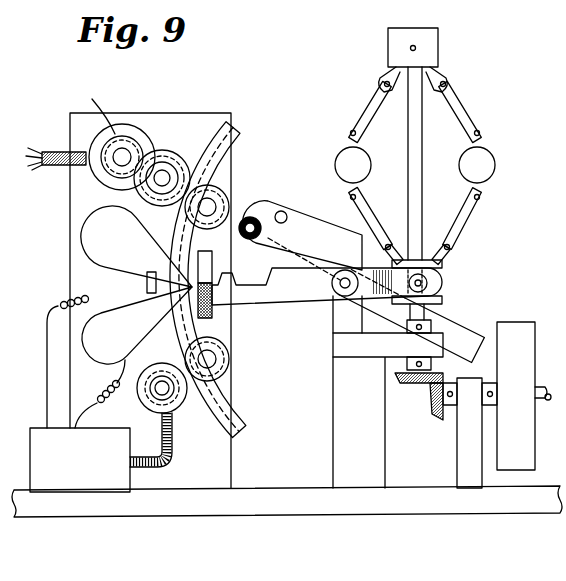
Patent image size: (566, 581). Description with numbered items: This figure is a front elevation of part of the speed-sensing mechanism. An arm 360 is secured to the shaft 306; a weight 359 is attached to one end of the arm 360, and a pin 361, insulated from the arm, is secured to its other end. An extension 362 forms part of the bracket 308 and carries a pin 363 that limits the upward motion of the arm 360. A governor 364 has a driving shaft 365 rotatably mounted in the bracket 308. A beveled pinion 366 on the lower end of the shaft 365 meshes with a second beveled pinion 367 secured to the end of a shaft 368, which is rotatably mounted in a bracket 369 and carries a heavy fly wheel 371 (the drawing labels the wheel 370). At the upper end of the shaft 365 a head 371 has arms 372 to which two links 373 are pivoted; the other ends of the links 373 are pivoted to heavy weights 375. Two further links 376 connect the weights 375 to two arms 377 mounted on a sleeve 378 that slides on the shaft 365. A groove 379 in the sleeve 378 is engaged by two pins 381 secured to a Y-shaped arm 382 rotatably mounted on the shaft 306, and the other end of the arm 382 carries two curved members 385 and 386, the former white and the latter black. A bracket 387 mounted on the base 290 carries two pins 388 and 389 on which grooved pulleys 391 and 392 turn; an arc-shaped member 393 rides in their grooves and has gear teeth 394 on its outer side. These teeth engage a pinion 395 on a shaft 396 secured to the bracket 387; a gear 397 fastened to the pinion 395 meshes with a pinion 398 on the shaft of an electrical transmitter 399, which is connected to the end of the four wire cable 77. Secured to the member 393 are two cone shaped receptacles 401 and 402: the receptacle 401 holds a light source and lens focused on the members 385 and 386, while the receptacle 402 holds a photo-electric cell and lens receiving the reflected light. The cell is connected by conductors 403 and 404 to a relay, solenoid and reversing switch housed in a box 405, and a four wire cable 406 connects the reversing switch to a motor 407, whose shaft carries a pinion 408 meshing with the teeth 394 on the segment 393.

The four wire cable 77 is at (44, 166).
The base 290 is at (165, 497).
The shaft 306 is at (340, 292).
The bracket 308 is at (335, 385).
The weight 359 is at (455, 330).
The arm 360 is at (251, 216).
The pin 361 is at (256, 218).
The extension 362 is at (315, 225).
The pin 363 is at (284, 212).
The governor 364 is at (534, 108).
The driving shaft 365 is at (408, 183).
The beveled pinion 366 is at (400, 377).
The beveled pinion 367 is at (440, 417).
The shaft 368 is at (543, 384).
The bracket 369 is at (462, 448).
The flywheel 370 is at (528, 446).
The head 371 is at (440, 44).
The arms 372 is at (381, 76).
The links 373 is at (366, 102).
The weights 375 is at (362, 158).
The links 376 is at (375, 224).
The arms 377 is at (395, 243).
The sleeve 378 is at (444, 266).
The groove 379 is at (433, 283).
The pins 381 is at (427, 290).
The Y-shaped arm 382 is at (294, 300).
The curved member 385 is at (205, 252).
The curved member 386 is at (210, 309).
The bracket 387 is at (227, 468).
The pin 388 is at (209, 206).
The pin 389 is at (210, 362).
The grooved pulley 391 is at (212, 198).
The grooved pulley 392 is at (230, 360).
The arc-shaped member 393 is at (223, 135).
The gear teeth 394 is at (181, 149).
The pinion 395 is at (162, 172).
The shaft 396 is at (170, 162).
The gear 397 is at (130, 200).
The pinion 398 is at (103, 167).
The electrical transmitter 399 is at (103, 136).
The cone shaped receptacle 401 is at (92, 235).
The cone shaped receptacle 402 is at (110, 316).
The conductor 403 is at (47, 365).
The conductor 404 is at (86, 404).
The box 405 is at (132, 477).
The four wire cable 406 is at (173, 457).
The motor 407 is at (176, 420).
The pinion 408 is at (150, 392).